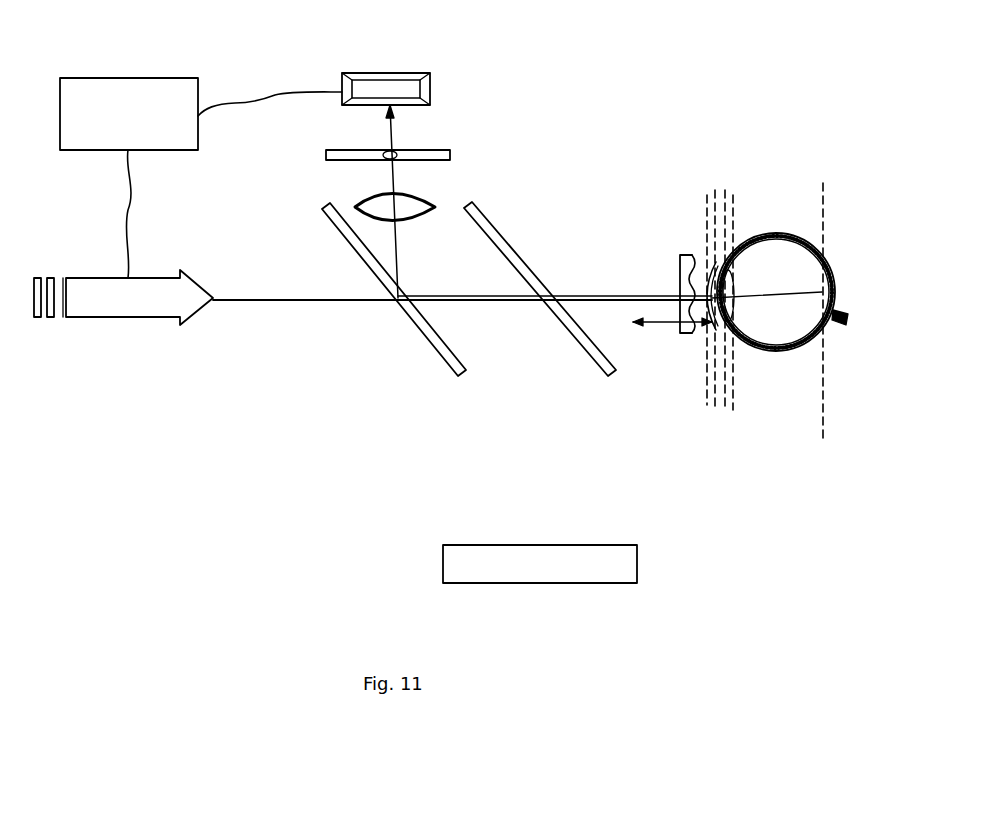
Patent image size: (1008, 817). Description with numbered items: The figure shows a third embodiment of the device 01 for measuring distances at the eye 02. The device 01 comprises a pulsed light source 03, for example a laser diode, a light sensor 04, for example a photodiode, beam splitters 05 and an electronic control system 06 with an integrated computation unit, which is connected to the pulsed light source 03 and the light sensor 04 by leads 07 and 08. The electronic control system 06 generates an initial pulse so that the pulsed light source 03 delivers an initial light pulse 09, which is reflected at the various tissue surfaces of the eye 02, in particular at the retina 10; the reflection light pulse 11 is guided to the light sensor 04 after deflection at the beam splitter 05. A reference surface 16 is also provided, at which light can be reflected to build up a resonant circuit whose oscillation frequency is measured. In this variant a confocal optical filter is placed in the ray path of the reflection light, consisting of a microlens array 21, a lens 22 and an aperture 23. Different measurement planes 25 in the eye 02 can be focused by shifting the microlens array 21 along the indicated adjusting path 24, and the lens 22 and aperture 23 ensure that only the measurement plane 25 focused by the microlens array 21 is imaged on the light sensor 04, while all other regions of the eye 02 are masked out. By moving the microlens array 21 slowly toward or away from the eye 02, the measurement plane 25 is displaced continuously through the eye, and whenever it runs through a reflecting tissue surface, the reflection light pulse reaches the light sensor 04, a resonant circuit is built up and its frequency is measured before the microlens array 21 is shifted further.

The device 01 is at (474, 79).
The eye 02 is at (774, 236).
The pulsed light source 03 is at (118, 317).
The light sensor 04 is at (400, 78).
The beam splitter 05 is at (456, 357).
The electronic control system 06 is at (131, 86).
The lead 07 is at (130, 228).
The lead 08 is at (268, 100).
The initial light pulse 09 is at (342, 300).
The retina 10 is at (822, 292).
The reflection light pulse 11 is at (399, 260).
The reference surface 16 is at (621, 546).
The microlens array 21 is at (687, 255).
The lens 22 is at (412, 200).
The aperture 23 is at (422, 151).
The adjusting path 24 is at (655, 325).
The measurement planes 25 is at (707, 195).